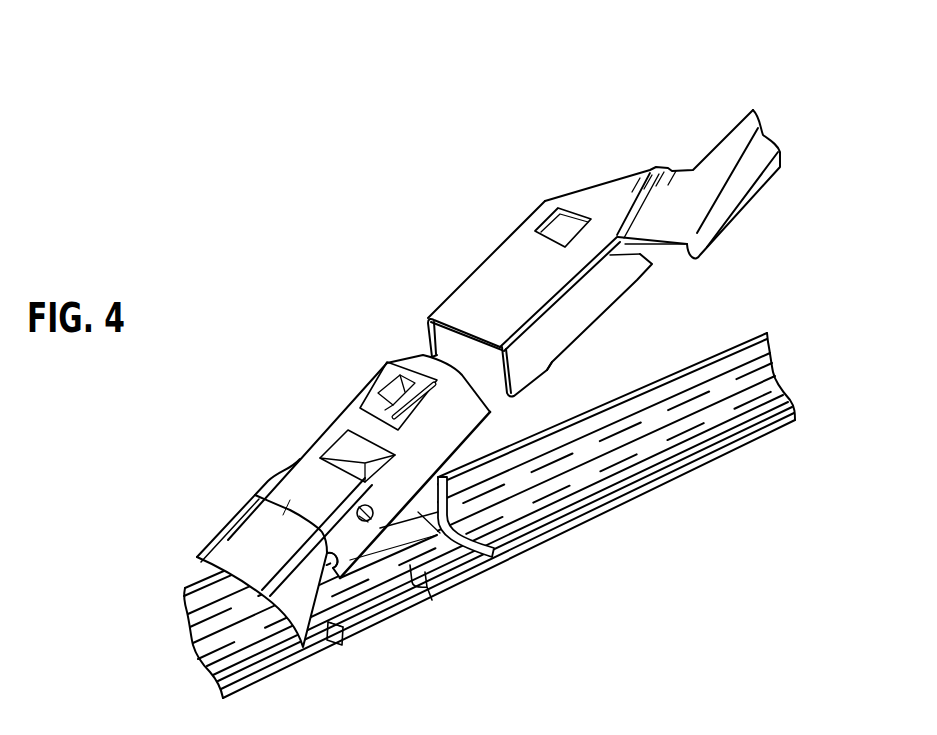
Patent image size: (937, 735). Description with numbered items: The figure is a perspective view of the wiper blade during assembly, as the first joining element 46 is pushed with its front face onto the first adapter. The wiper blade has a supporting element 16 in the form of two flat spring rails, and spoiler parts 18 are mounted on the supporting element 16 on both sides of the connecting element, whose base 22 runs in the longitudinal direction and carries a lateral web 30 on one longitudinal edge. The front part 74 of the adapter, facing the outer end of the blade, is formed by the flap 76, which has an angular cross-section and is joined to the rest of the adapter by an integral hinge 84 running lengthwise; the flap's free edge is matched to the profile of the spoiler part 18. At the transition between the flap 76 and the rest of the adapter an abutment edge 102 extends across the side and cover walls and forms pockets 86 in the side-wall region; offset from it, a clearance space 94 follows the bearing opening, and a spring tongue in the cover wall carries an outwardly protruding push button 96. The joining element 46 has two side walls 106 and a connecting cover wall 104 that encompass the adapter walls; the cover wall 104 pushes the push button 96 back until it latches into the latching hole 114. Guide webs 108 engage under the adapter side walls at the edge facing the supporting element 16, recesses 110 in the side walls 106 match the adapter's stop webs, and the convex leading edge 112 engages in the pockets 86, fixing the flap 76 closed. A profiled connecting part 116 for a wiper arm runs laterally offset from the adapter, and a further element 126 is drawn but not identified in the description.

The spoiler part 18 is at (770, 364).
The front part 74 is at (287, 533).
The flap 76 is at (267, 530).
The integral hinge 84 is at (218, 532).
The pocket 86 is at (324, 565).
The clearance space 94 is at (343, 452).
The push button 96 is at (387, 395).
The abutment edge 102 is at (285, 513).
The supporting element 16 is at (370, 580).
The base 22 is at (445, 528).
The lateral web 30 is at (418, 513).
The clip 126 is at (410, 540).
The first joining element 46 is at (577, 208).
The cover wall 104 is at (505, 278).
The side wall 106 is at (583, 302).
The guide web 108 is at (587, 340).
The recess 110 is at (552, 365).
The convex leading edge 112 is at (427, 343).
The latching hole 114 is at (557, 227).
The profiled connecting part 116 is at (747, 140).